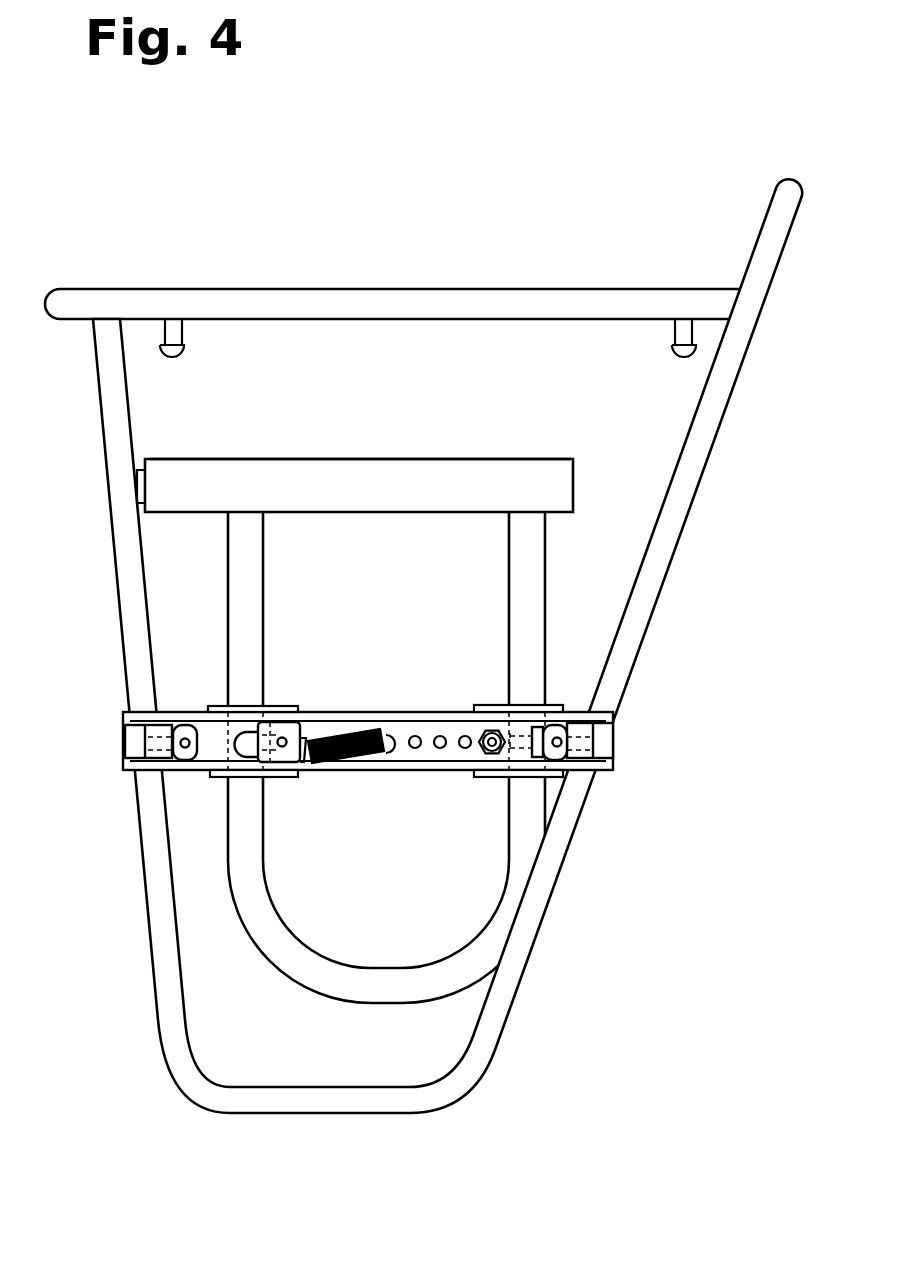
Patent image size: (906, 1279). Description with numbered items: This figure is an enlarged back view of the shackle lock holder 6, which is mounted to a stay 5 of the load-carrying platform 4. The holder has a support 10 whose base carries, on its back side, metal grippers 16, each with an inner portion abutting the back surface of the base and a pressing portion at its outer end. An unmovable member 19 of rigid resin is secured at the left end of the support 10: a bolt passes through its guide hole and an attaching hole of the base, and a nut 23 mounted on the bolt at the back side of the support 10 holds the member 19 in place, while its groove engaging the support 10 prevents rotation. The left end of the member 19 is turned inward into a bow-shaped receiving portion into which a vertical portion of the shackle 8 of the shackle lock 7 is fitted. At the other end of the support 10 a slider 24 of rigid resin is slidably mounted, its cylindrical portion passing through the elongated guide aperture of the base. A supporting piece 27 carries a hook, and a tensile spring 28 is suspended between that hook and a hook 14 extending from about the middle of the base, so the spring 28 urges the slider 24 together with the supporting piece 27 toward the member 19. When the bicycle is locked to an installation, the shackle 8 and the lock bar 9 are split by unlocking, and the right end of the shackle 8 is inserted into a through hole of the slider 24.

The load-carrying platform 4 is at (315, 289).
The stay 5 is at (716, 435).
The shackle lock holder 6 is at (414, 664).
The shackle lock 7 is at (290, 459).
The shackle 8 is at (263, 552).
The lock bar 9 is at (352, 459).
The support 10 is at (437, 712).
The hook 14 is at (381, 727).
The grippers 16 is at (125, 741).
The unmovable member 19 is at (555, 705).
The nut 23 is at (494, 730).
The slider 24 is at (215, 706).
The supporting piece 27 is at (284, 762).
The tensile spring 28 is at (333, 740).